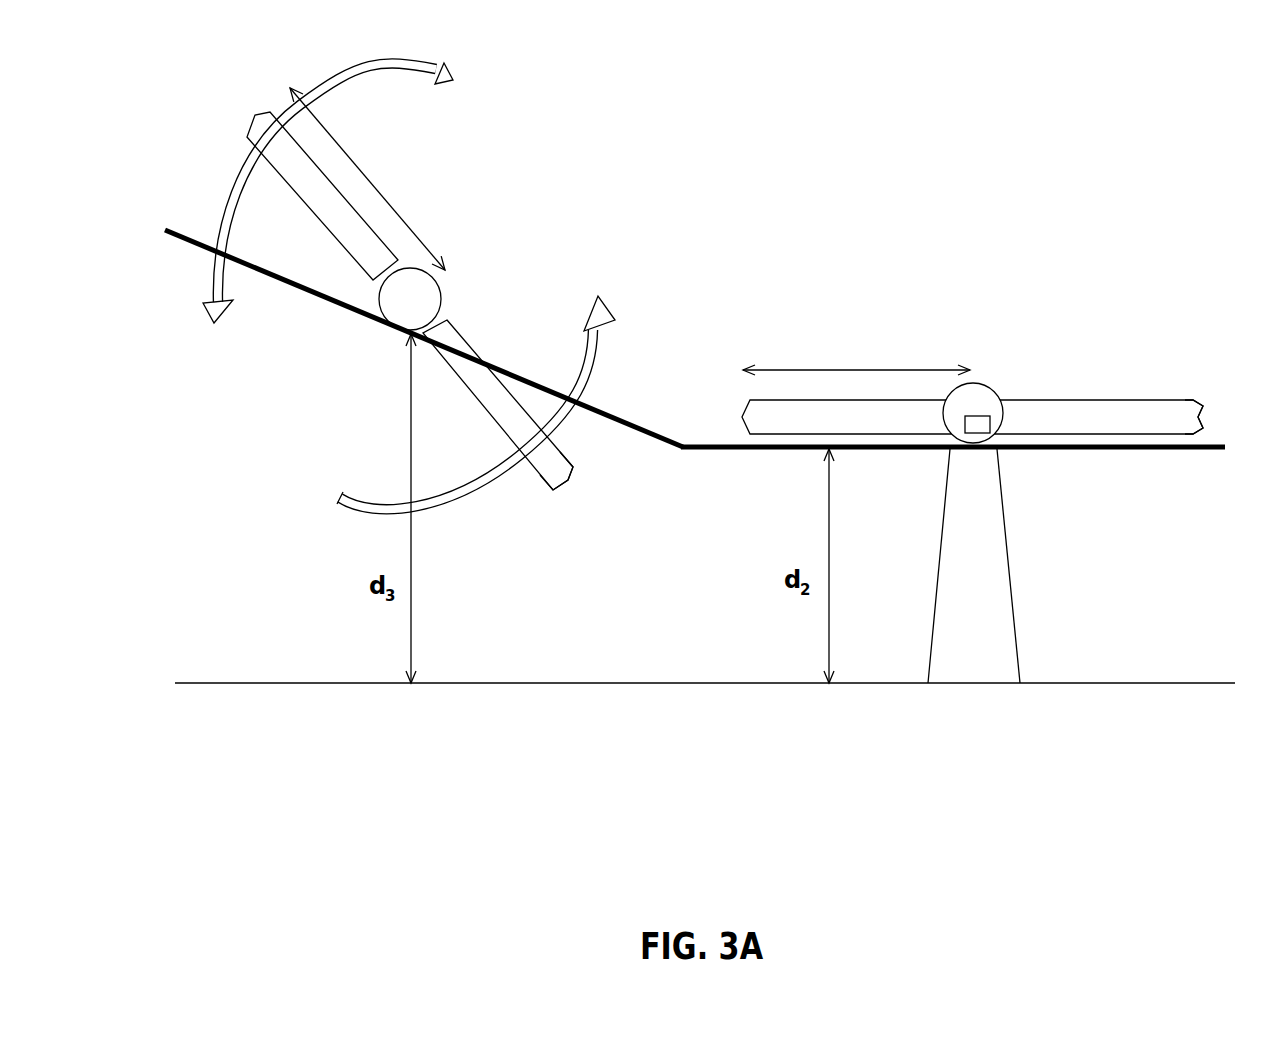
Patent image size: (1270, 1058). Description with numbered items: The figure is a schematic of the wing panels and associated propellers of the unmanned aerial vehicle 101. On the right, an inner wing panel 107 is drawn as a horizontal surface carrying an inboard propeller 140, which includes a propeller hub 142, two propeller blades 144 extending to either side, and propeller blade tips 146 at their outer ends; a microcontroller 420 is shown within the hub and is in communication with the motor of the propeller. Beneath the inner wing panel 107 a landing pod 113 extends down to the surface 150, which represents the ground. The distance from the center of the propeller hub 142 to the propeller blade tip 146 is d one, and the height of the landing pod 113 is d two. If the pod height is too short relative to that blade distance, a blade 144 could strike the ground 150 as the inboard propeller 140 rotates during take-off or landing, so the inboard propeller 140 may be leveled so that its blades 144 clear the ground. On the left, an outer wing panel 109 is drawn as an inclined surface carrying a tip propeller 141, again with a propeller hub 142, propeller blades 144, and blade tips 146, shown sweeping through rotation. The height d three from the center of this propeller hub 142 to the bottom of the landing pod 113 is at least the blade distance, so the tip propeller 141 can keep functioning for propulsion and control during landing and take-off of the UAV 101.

The unmanned aerial vehicle 101 is at (1075, 123).
The inner wing panel 107 is at (697, 445).
The outer wing panel 109 is at (165, 228).
The landing pod 113 is at (1013, 583).
The inboard propeller 140 is at (910, 328).
The tip propeller 141 is at (560, 214).
The propeller hub 142 is at (444, 287).
The propeller blade 144 is at (477, 348).
The propeller blade tip 146 is at (570, 490).
The ground surface 150 is at (733, 687).
The microcontroller 420 is at (992, 430).